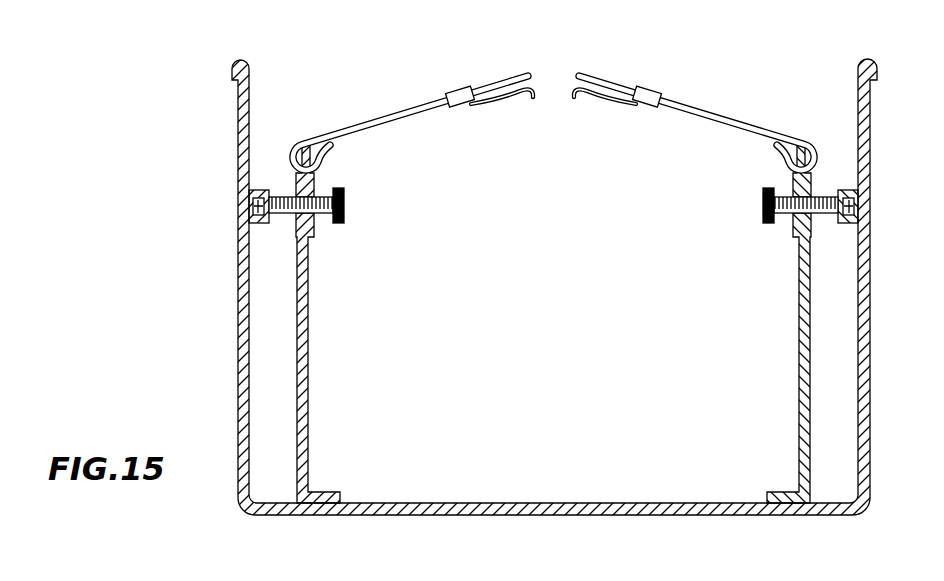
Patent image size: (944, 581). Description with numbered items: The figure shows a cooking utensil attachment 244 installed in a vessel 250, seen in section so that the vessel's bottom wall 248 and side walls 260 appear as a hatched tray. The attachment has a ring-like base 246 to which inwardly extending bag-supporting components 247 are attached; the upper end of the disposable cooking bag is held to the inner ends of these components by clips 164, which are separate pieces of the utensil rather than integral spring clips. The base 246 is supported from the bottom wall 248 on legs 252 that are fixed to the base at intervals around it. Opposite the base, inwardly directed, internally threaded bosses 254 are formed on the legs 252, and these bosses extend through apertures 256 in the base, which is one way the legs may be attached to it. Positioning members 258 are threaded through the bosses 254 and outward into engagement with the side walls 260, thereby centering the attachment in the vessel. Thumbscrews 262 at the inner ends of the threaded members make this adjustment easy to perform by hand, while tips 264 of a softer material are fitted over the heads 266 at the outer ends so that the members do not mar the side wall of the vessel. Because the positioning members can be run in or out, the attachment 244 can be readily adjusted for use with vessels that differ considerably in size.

The cooking utensil attachment 244 is at (192, 50).
The ring-like base 246 is at (298, 137).
The bag-supporting components 247 is at (538, 106).
The clips 164 is at (604, 96).
The bottom wall 248 is at (500, 512).
The vessel 250 is at (500, 304).
The legs 252 is at (488, 358).
The internally threaded bosses 254 is at (318, 178).
The apertures 256 is at (322, 215).
The positioning members 258 is at (270, 187).
The side walls 260 is at (238, 281).
The thumbscrews 262 is at (347, 205).
The tips 264 is at (266, 224).
The heads 266 is at (512, 204).